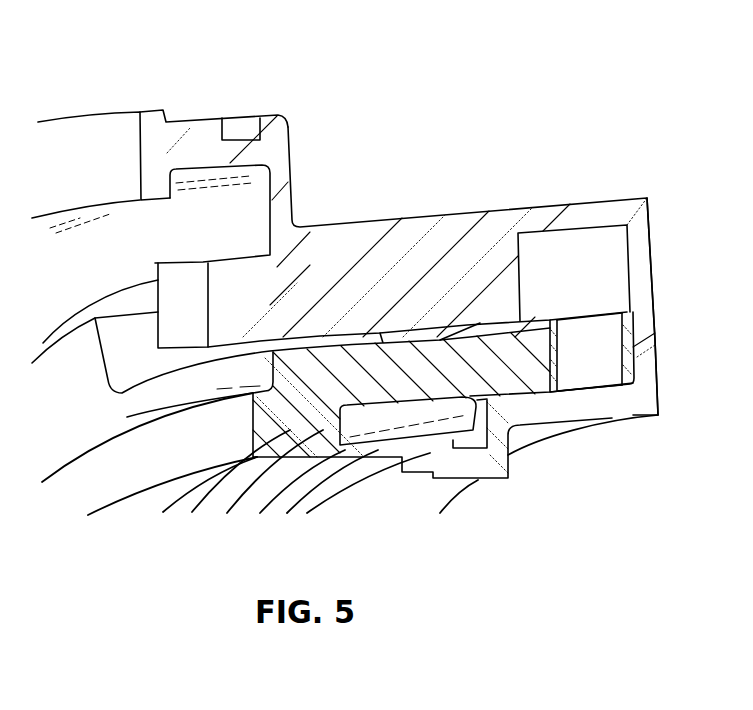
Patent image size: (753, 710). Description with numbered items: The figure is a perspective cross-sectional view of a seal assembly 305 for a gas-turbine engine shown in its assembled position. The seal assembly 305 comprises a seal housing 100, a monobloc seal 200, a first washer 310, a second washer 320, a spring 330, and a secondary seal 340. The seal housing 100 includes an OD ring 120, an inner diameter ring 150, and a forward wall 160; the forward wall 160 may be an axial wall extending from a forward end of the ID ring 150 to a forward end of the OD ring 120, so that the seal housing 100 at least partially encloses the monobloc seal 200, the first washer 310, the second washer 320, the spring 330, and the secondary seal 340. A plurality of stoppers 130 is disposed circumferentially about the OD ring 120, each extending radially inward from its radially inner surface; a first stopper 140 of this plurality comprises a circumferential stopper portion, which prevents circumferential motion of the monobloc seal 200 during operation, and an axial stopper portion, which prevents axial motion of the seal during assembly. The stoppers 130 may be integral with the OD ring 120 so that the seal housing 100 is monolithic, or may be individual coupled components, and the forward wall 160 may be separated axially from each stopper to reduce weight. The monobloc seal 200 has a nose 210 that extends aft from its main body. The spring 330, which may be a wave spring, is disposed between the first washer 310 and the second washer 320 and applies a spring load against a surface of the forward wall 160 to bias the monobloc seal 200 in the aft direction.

The seal housing 100 is at (440, 194).
The OD ring 120 is at (572, 215).
The plurality of stoppers 130 is at (318, 280).
The first stopper 140 is at (427, 285).
The inner diameter (ID) ring 150 is at (542, 415).
The forward wall 160 is at (645, 298).
The monobloc seal 200 is at (181, 434).
The nose 210 is at (88, 477).
The seal assembly 305 is at (190, 66).
The first washer 310 is at (633, 373).
The second washer 320 is at (556, 372).
The spring 330 is at (595, 370).
The secondary seal 340 is at (477, 437).